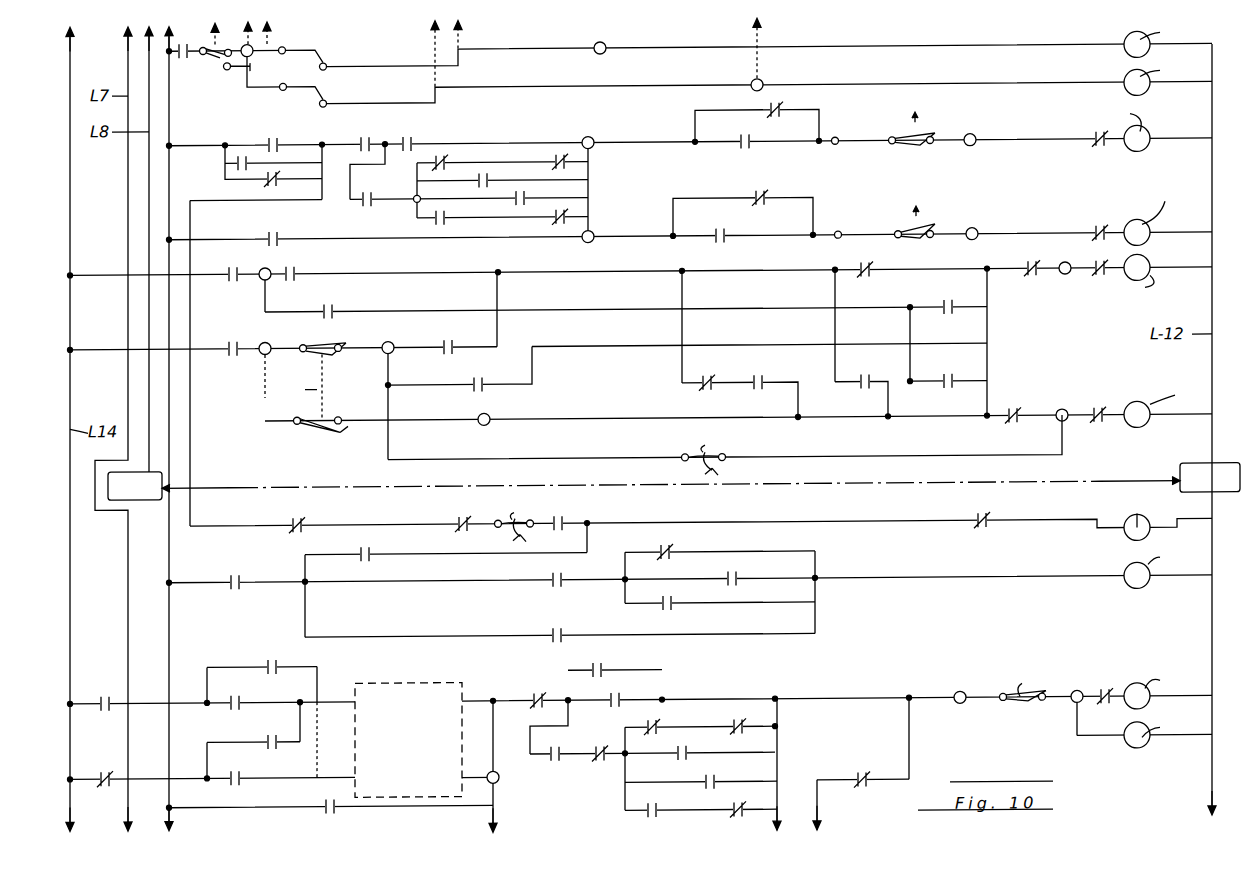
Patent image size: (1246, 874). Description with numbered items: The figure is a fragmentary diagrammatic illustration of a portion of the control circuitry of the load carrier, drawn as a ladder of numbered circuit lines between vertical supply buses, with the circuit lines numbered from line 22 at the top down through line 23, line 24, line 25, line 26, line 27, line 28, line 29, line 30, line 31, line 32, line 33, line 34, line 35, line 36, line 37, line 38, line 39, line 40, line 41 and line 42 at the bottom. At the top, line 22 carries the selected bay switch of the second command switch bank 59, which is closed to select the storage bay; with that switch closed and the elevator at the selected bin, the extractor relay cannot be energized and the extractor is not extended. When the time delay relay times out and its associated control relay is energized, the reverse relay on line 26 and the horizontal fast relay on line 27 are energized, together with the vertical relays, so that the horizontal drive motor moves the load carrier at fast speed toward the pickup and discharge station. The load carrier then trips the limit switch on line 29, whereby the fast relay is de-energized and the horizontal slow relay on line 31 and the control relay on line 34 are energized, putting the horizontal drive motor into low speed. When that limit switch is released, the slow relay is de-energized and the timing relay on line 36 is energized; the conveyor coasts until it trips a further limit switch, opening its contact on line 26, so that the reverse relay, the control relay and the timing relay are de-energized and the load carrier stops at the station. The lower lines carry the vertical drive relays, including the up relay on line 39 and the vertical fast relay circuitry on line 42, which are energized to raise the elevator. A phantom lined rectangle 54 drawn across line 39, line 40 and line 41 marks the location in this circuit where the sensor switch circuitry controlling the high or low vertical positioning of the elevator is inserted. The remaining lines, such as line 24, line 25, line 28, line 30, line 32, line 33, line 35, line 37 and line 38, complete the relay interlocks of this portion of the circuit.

The line 22 is at (58, 55).
The line 23 is at (58, 92).
The line 24 is at (58, 148).
The line 25 is at (58, 203).
The line 26 is at (58, 247).
The line 27 is at (58, 285).
The line 28 is at (58, 322).
The line 29 is at (58, 358).
The line 30 is at (58, 393).
The line 31 is at (58, 430).
The line 32 is at (58, 467).
The line 33 is at (58, 495).
The line 34 is at (58, 530).
The line 35 is at (58, 563).
The line 36 is at (58, 593).
The line 37 is at (58, 643).
The line 38 is at (58, 677).
The line 39 is at (58, 710).
The line 40 is at (58, 752).
The line 41 is at (58, 788).
The line 42 is at (58, 818).
The phantom lined rectangle 54 is at (376, 685).
The second command switch bank 59 is at (322, 79).